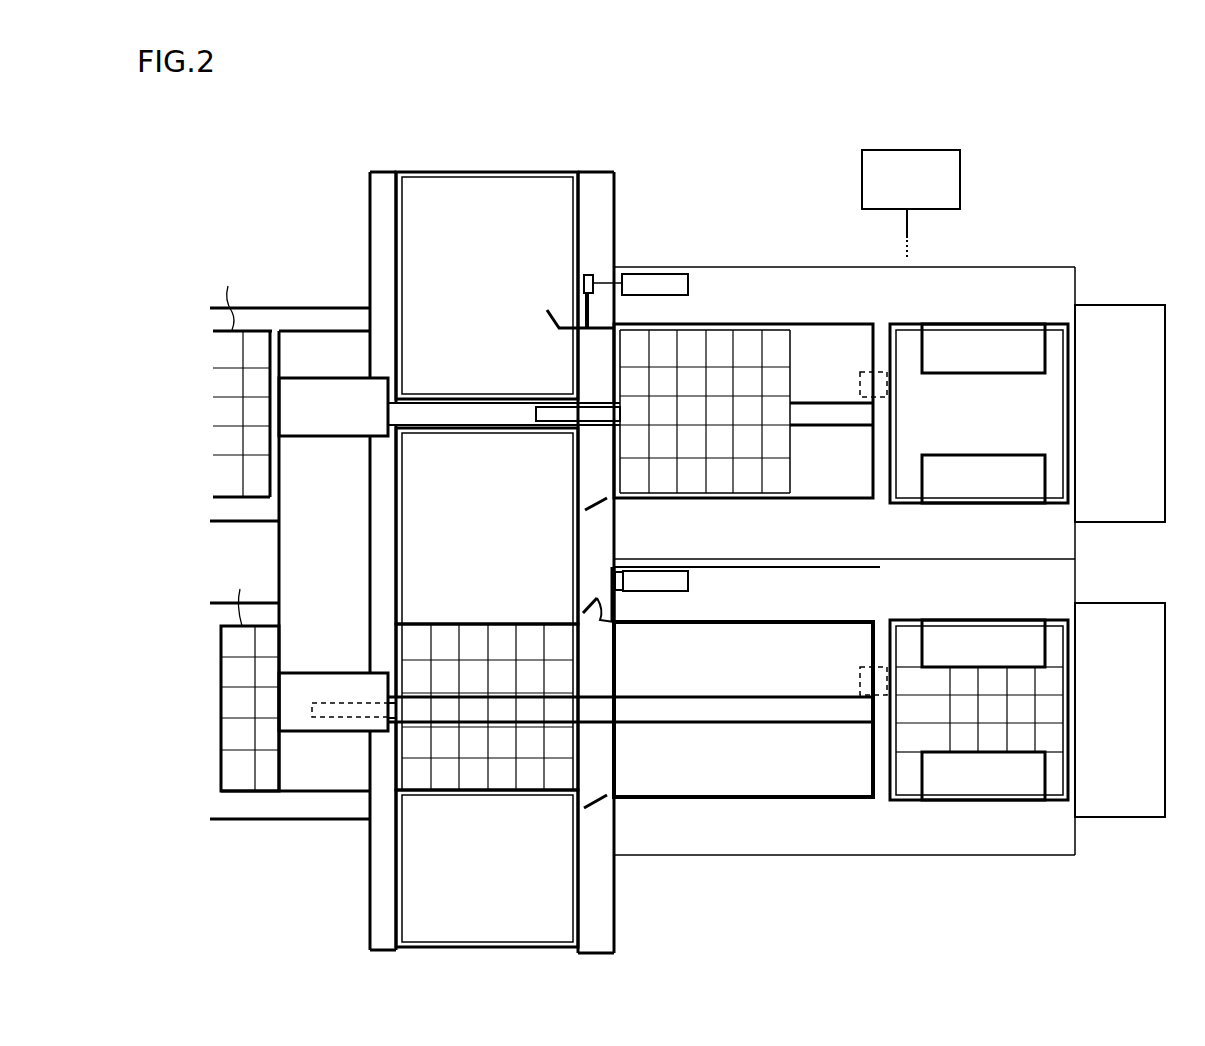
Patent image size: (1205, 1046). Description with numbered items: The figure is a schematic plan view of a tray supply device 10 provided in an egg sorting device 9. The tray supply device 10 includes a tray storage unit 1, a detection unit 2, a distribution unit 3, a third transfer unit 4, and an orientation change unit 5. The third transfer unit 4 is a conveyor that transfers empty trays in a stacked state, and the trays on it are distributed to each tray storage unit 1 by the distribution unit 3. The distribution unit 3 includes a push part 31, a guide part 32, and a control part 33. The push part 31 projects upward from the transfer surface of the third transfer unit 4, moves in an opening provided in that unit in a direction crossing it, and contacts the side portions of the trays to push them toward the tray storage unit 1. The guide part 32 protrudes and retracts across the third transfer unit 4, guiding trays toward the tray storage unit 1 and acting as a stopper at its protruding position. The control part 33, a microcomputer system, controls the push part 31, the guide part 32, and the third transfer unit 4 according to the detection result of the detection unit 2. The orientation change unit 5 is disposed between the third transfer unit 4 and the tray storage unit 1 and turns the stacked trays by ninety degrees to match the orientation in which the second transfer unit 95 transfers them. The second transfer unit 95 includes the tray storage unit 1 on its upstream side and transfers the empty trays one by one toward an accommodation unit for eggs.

The tray storage unit 1 is at (1058, 321).
The detection unit 2 is at (882, 396).
The distribution unit 3 is at (623, 872).
The third transfer unit 4 is at (478, 170).
The orientation change unit 5 is at (753, 769).
The egg sorting device 9 is at (248, 251).
The tray supply device 10 is at (638, 146).
The push part 31 is at (548, 402).
The guide part 32 is at (546, 311).
The control part 33 is at (962, 180).
The second transfer unit 95 is at (257, 309).